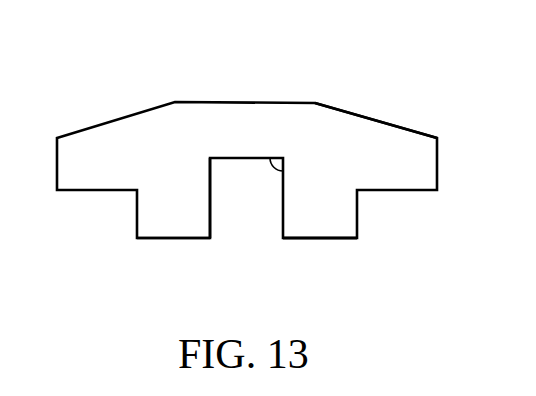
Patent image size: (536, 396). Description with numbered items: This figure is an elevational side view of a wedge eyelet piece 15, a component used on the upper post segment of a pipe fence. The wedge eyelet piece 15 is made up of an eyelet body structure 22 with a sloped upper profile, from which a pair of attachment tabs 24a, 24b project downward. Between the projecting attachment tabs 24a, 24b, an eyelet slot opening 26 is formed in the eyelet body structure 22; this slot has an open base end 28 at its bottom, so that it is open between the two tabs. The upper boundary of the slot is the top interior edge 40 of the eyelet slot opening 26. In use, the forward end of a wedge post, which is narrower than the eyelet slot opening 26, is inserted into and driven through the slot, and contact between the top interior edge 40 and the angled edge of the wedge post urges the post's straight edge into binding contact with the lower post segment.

The wedge eyelet piece 15 is at (140, 92).
The eyelet body structure 22 is at (355, 109).
The top interior edge 40 is at (287, 167).
The eyelet slot opening 26 is at (228, 195).
The attachment tab 24a is at (170, 242).
The attachment tab 24b is at (322, 242).
The open base end 28 is at (239, 254).